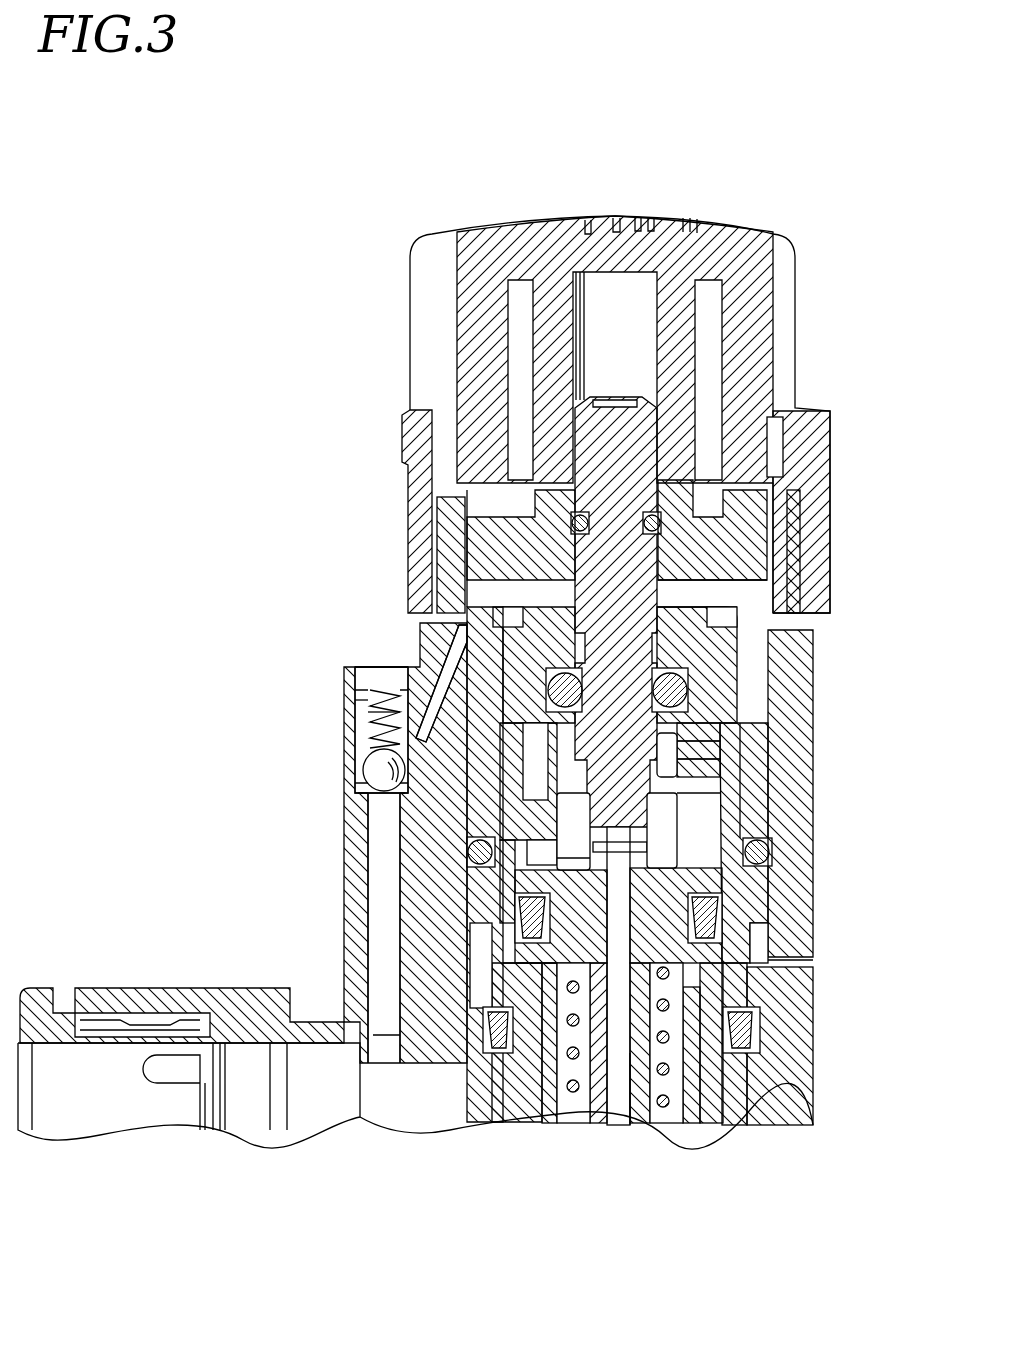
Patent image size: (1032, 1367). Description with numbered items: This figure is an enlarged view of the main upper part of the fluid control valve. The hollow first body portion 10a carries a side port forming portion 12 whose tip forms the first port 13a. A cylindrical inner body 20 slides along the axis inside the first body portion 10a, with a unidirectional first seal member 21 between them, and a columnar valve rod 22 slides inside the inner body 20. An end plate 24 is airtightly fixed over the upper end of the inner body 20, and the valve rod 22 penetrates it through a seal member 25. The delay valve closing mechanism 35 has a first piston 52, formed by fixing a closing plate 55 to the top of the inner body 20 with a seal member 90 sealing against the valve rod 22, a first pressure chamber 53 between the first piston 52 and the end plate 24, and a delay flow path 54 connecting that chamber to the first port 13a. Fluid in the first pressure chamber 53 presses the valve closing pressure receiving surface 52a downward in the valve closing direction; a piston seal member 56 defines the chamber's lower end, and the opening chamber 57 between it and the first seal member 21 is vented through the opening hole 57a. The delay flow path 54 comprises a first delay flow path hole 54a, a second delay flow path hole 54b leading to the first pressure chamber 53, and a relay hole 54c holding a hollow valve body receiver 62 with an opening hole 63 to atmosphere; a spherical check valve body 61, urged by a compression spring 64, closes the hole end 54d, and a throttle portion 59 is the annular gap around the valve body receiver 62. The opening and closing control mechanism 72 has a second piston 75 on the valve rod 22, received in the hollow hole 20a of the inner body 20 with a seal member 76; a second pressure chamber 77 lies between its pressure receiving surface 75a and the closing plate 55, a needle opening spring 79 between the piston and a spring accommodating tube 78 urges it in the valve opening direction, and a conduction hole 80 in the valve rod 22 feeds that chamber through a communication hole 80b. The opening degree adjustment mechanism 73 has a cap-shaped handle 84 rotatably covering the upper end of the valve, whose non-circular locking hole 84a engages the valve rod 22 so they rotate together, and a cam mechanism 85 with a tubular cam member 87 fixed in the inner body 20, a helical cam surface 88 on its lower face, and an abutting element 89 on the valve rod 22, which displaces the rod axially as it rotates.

The opening degree adjustment mechanism 73 is at (827, 257).
The handle 84 is at (668, 245).
The locking hole 84a is at (580, 300).
The seal member 25 is at (770, 490).
The end plate 24 is at (720, 535).
The valve closing pressure receiving surface 52a is at (793, 578).
The closing plate 55 is at (695, 617).
The first piston 52 is at (785, 637).
The seal member 90 is at (670, 690).
The inner body 20 is at (790, 720).
The hollow hole 20a is at (490, 1090).
The cam mechanism 85 is at (878, 722).
The cam member 87 is at (712, 732).
The helical cam surface 88 is at (717, 777).
The abutting element 89 is at (683, 790).
The conduction hole 80 is at (617, 1110).
The communication hole 80b is at (648, 846).
The second piston 75 is at (658, 907).
The pressure receiving surface 75a is at (703, 862).
The seal member 76 is at (480, 955).
The second pressure chamber 77 is at (520, 928).
The piston seal member 56 is at (540, 858).
The opening chamber 57 is at (760, 940).
The opening hole 57a is at (790, 960).
The first seal member 21 is at (735, 1018).
The spring accommodating tube 78 is at (545, 1100).
The needle opening spring 79 is at (665, 1070).
The valve rod 22 is at (640, 1125).
The first body portion 10a is at (790, 1107).
The opening and closing control mechanism 72 is at (728, 1153).
The first pressure chamber 53 is at (515, 597).
The delay flow path 54 is at (312, 835).
The first delay flow path hole 54a is at (384, 860).
The second delay flow path hole 54b is at (383, 677).
The relay hole 54c is at (355, 690).
The hole end 54d is at (350, 788).
The throttle portion 59 is at (420, 745).
The check valve body 61 is at (384, 770).
The valve body receiver 62 is at (343, 697).
The opening hole 63 is at (367, 687).
The compression spring 64 is at (370, 712).
The delay valve closing mechanism 35 is at (244, 645).
The port forming portion 12 is at (110, 1003).
The first port 13a is at (80, 1108).